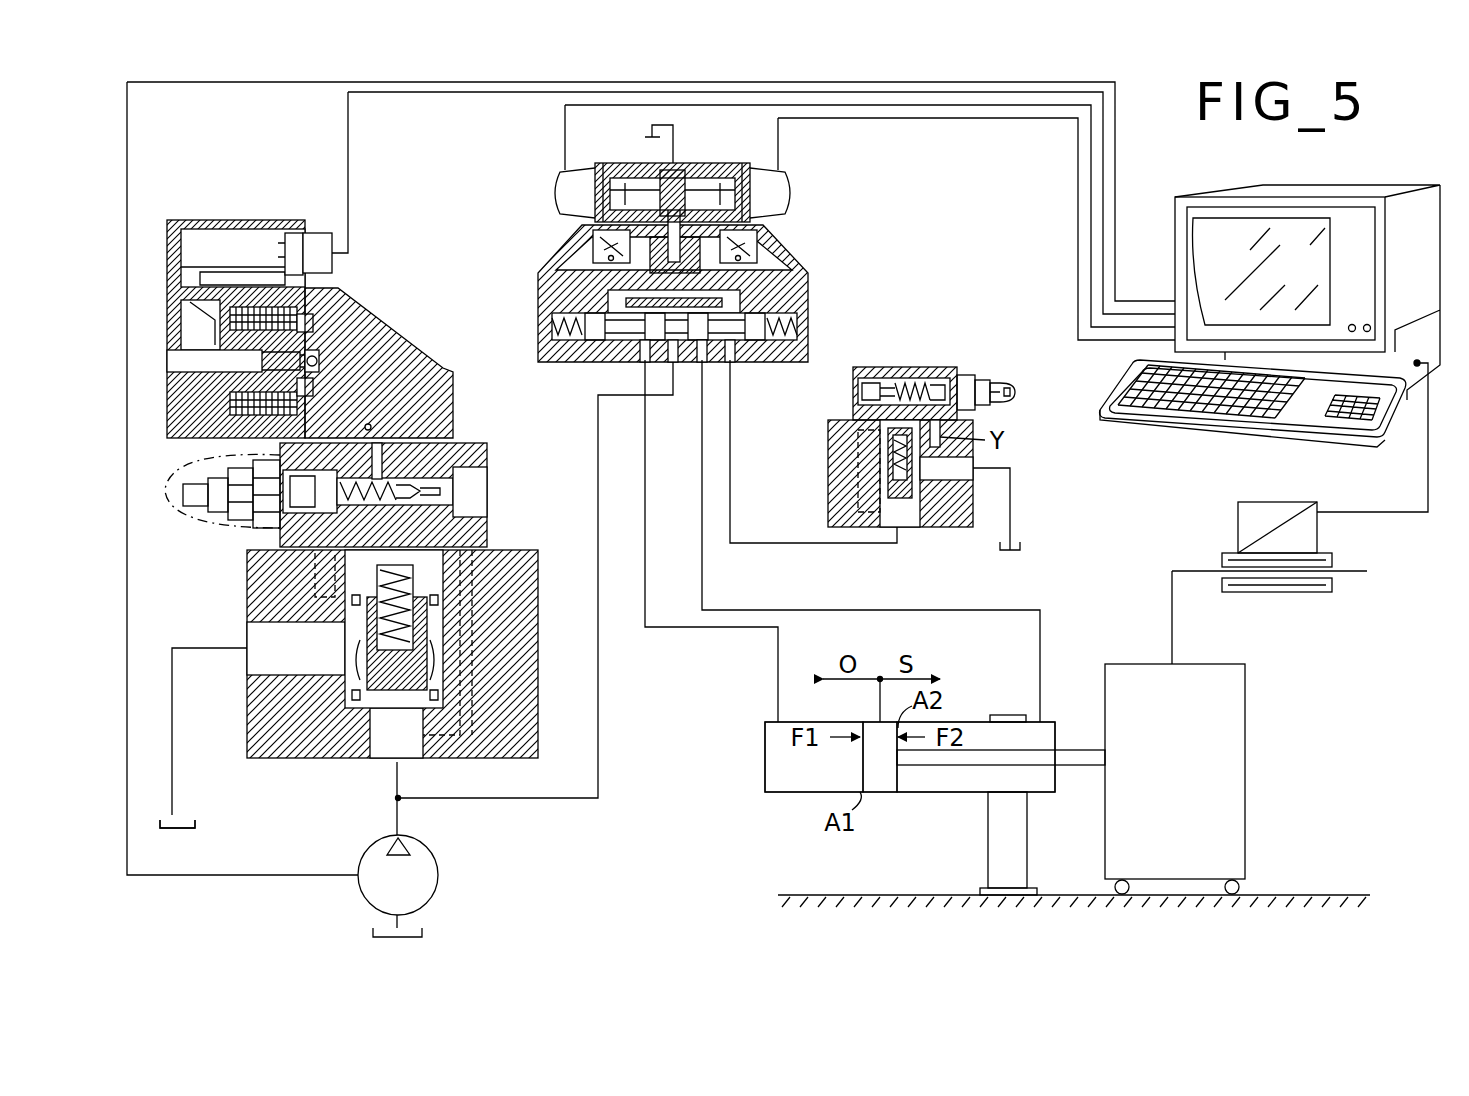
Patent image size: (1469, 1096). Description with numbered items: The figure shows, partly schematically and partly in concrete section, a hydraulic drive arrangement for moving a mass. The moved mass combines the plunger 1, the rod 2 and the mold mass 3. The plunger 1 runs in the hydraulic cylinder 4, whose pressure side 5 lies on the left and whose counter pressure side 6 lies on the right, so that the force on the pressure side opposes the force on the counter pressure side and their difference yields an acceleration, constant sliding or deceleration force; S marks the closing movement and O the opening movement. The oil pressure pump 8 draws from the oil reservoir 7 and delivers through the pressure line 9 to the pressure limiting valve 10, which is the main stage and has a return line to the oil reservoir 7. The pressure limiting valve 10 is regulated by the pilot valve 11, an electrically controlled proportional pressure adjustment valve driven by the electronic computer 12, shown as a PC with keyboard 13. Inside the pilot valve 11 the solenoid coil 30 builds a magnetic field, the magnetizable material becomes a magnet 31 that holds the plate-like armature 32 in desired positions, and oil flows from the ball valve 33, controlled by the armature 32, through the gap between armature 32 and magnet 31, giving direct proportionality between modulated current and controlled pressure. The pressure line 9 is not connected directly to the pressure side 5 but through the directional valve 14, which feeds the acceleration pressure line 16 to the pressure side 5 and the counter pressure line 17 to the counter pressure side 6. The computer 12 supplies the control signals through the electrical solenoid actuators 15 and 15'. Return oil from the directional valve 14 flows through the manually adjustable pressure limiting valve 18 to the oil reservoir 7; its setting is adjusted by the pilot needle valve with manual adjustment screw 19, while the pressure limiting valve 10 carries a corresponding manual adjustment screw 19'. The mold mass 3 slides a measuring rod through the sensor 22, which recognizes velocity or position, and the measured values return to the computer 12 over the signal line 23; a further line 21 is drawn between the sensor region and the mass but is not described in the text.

The plunger 1 is at (880, 792).
The rod 2 is at (957, 765).
The mold mass 3 is at (1245, 727).
The hydraulic cylinder 4 is at (790, 792).
The pressure side 5 is at (778, 758).
The counter pressure side 6 is at (972, 735).
The oil reservoir 7 is at (200, 826).
The oil pressure pump 8 is at (428, 853).
The pressure line 9 is at (600, 700).
The pressure limiting valve 10 is at (505, 533).
The pilot valve 11 is at (443, 280).
The electronic computer 12 is at (1355, 192).
The keyboard 13 is at (1147, 425).
The directional valve 14 is at (827, 302).
The electrical solenoid actuator 15 is at (730, 173).
The electrical solenoid actuator 15' is at (541, 193).
The acceleration pressure line 16 is at (718, 630).
The counter pressure line 17 is at (762, 610).
The pressure limiting valve 18 is at (817, 464).
The manual adjustment screw 19 is at (993, 371).
The manual adjustment screw 19' is at (220, 508).
The signal line 21 is at (1172, 605).
The sensor 22 is at (1272, 510).
The signal line 23 is at (1428, 462).
The solenoid coil 30 is at (262, 300).
The magnet 31 is at (283, 298).
The armature 32 is at (312, 322).
The ball valve 33 is at (319, 362).